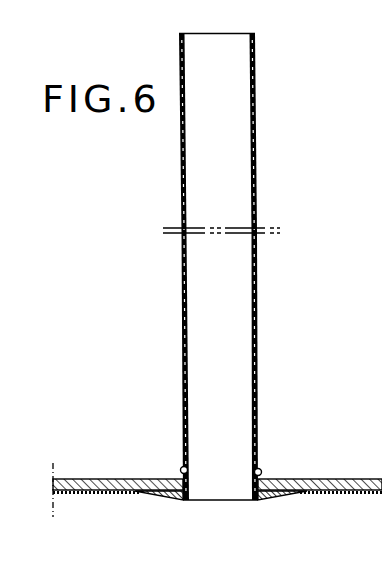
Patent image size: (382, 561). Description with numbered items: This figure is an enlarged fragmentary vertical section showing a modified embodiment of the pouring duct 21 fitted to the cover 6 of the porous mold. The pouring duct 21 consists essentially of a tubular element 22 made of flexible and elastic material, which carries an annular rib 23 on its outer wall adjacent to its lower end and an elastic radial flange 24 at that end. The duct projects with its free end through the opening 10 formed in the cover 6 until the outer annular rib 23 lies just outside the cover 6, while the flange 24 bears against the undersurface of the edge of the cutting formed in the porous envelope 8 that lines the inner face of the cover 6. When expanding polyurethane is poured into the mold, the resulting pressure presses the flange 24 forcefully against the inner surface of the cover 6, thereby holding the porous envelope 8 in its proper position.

The cover 6 is at (98, 478).
The porous envelope 8 is at (350, 494).
The opening 10 is at (196, 483).
The pouring duct 21 is at (264, 151).
The tubular element 22 is at (258, 331).
The annular rib 23 is at (261, 471).
The elastic radial flange 24 is at (274, 503).